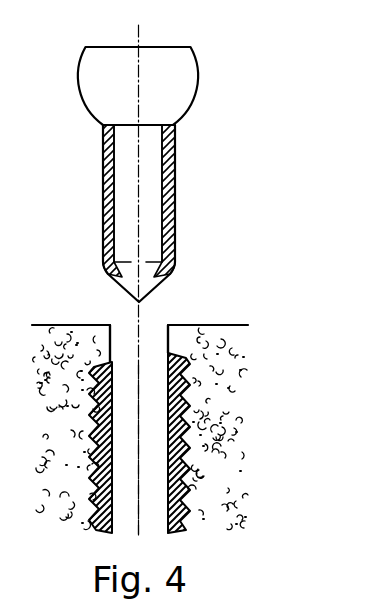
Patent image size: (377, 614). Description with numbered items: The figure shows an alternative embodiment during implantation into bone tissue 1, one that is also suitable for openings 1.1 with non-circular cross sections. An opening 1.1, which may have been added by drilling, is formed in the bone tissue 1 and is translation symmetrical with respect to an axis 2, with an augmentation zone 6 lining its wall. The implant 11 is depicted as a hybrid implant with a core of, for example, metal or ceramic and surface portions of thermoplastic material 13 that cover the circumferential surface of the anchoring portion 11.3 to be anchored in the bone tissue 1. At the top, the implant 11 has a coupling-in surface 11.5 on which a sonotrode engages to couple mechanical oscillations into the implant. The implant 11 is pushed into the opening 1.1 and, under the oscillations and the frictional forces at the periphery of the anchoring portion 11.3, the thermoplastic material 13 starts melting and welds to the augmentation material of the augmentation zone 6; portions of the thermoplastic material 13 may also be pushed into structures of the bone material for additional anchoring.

The bone tissue 1 is at (225, 338).
The opening 1.1 is at (122, 327).
The axis 2 is at (140, 509).
The augmentation zone 6 is at (190, 410).
The implant 11 is at (77, 84).
The anchoring portion 11.3 is at (147, 213).
The coupling-in surface 11.5 is at (111, 48).
The thermoplastic material 13 is at (187, 293).